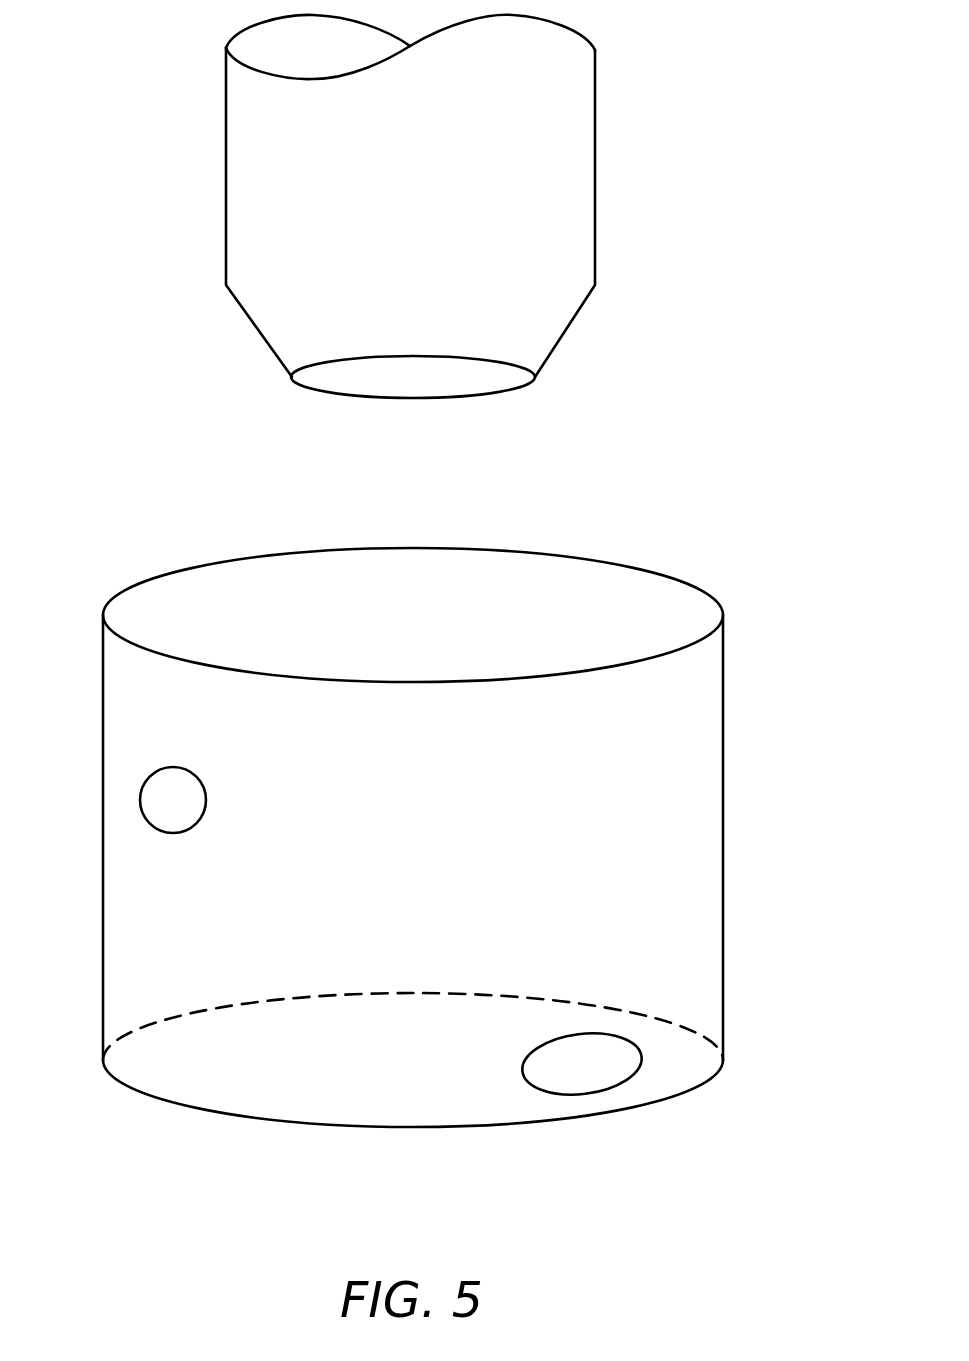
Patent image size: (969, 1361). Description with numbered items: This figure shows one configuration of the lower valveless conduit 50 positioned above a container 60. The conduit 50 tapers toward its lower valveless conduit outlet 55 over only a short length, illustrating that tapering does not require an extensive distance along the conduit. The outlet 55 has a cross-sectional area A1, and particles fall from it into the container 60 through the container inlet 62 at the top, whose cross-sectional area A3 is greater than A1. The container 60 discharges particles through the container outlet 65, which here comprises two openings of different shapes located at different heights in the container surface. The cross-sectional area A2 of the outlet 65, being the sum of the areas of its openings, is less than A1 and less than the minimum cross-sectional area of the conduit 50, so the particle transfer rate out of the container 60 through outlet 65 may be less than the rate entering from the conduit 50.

The lower valveless conduit 50 is at (448, 206).
The lower valveless conduit outlet 55 is at (556, 389).
The container 60 is at (431, 802).
The container inlet 62 is at (666, 693).
The container outlet 65 is at (206, 800).
The cross-sectional area of lower valveless conduit outlet A1 is at (448, 378).
The cross-sectional area of container outlet A2 is at (175, 807).
The cross-sectional area of container inlet A3 is at (533, 622).